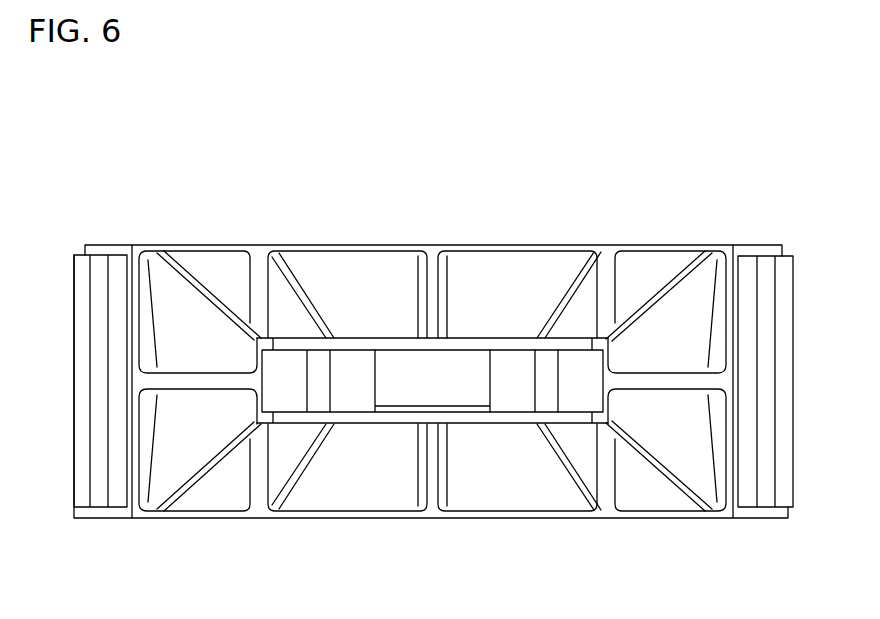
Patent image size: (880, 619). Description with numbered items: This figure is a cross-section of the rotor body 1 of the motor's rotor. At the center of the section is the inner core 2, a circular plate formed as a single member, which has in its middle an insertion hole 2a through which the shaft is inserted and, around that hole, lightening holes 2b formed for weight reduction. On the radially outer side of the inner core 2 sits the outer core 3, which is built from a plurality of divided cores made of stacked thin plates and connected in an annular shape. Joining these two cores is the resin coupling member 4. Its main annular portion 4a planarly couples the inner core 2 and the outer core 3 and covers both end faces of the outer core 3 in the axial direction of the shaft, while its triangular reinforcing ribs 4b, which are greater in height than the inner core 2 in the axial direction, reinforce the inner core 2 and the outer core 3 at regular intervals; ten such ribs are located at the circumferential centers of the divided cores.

The rotor body 1 is at (760, 245).
The inner core 2 is at (432, 383).
The insertion hole 2a is at (407, 367).
The lightening holes 2b is at (545, 383).
The outer core 3 is at (765, 403).
The coupling member 4 is at (648, 384).
The main annular portion 4a is at (668, 386).
The reinforcing ribs 4b is at (579, 288).